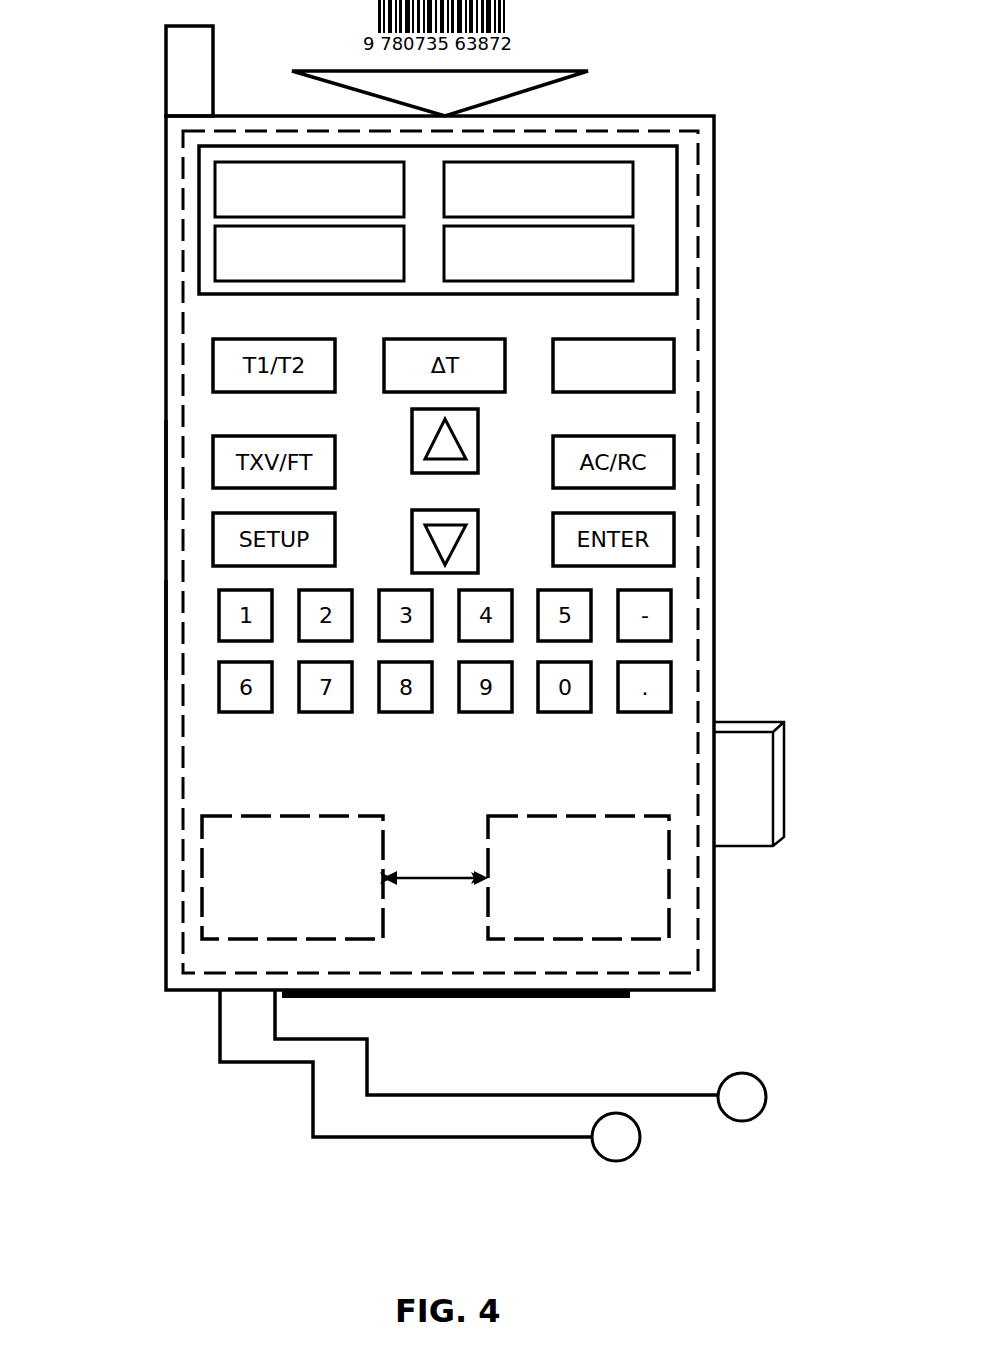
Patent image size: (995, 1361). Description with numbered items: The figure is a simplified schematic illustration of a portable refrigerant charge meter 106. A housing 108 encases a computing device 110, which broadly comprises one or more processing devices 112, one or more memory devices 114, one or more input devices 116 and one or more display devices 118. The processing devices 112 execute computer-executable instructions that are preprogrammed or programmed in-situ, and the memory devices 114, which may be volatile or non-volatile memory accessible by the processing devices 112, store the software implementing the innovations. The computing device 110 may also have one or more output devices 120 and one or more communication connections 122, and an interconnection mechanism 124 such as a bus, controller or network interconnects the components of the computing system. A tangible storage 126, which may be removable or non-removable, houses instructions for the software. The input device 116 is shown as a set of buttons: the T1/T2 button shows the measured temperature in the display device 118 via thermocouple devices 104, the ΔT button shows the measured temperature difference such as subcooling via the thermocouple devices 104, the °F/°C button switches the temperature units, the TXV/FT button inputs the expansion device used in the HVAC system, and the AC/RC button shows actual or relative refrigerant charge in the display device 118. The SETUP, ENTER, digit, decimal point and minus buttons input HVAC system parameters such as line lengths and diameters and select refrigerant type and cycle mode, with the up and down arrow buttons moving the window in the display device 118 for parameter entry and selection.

The thermocouple devices 104 is at (724, 1124).
The portable refrigerant charge meter 106 is at (155, 1015).
The housing 108 is at (162, 634).
The computing device 110 is at (162, 476).
The processing devices 112 is at (292, 877).
The memory devices 114 is at (578, 877).
The input devices 116 is at (588, 71).
The display devices 118 is at (653, 218).
The output devices 120 is at (635, 1002).
The communication connections 122 is at (166, 95).
The interconnection mechanism 124 is at (434, 870).
The tangible storage 126 is at (761, 725).